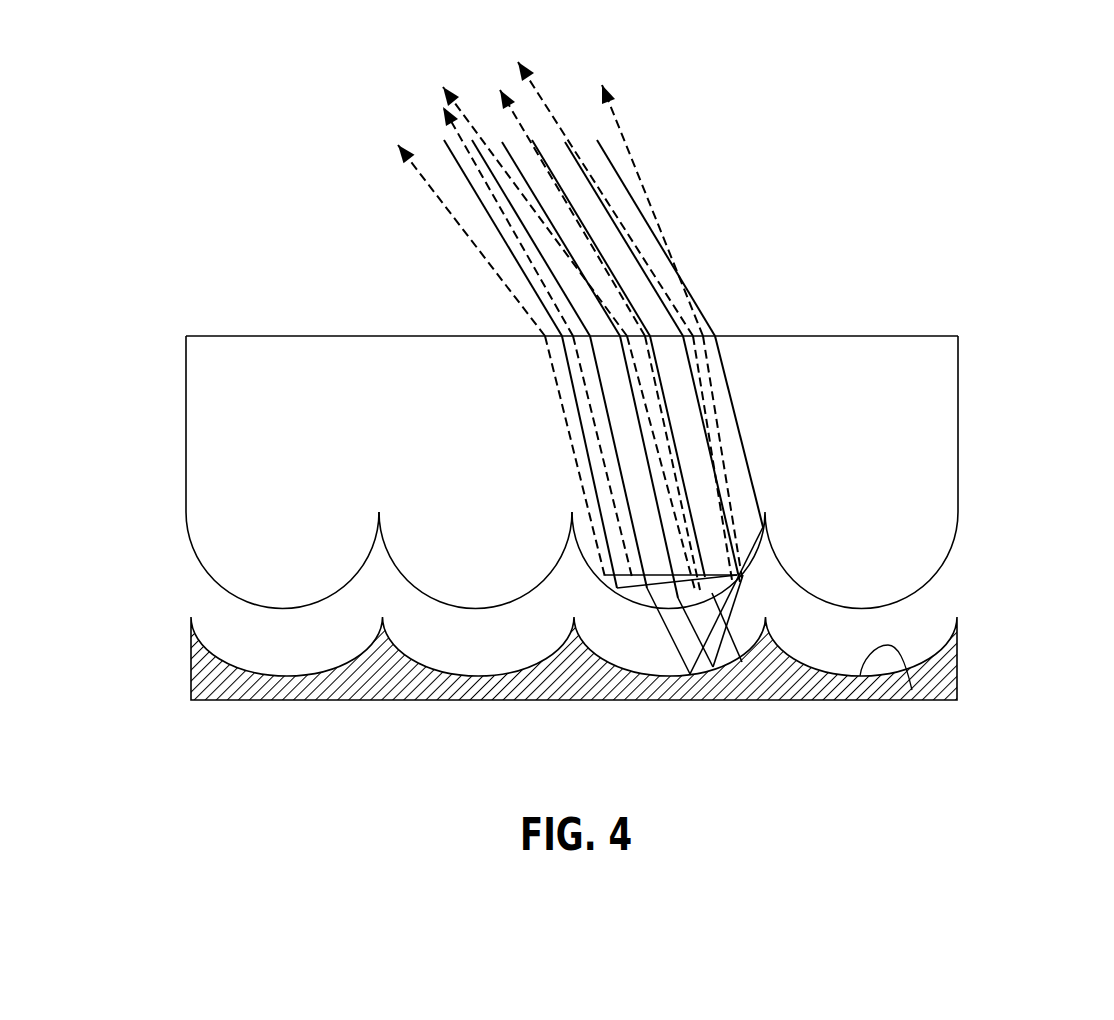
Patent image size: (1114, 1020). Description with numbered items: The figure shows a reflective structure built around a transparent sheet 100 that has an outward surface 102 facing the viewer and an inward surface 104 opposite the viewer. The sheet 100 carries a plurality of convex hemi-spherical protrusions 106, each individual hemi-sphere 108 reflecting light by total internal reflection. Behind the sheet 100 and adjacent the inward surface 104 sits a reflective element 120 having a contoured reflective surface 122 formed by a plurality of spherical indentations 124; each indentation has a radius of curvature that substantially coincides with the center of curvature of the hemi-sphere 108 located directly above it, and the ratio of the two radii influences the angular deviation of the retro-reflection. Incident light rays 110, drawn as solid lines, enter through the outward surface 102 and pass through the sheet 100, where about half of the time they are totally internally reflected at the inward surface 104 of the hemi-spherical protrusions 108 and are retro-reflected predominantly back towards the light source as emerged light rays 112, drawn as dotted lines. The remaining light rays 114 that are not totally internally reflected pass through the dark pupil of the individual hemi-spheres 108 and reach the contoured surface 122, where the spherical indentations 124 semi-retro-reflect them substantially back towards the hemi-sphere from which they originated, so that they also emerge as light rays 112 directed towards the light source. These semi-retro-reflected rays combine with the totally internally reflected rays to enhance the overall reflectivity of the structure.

The transparent sheet 100 is at (409, 431).
The outward surface 102 is at (785, 335).
The inward surface 104 is at (208, 575).
The hemi-spherical protrusions 106 is at (975, 512).
The hemi-sphere 108 is at (263, 553).
The incident light rays 110 is at (568, 195).
The emerged light rays 112 is at (443, 205).
The light rays not totally internally reflected 114 is at (670, 636).
The reflective element 120 is at (957, 692).
The reflective surface 122 is at (912, 690).
The spherical indentations 124 is at (975, 605).